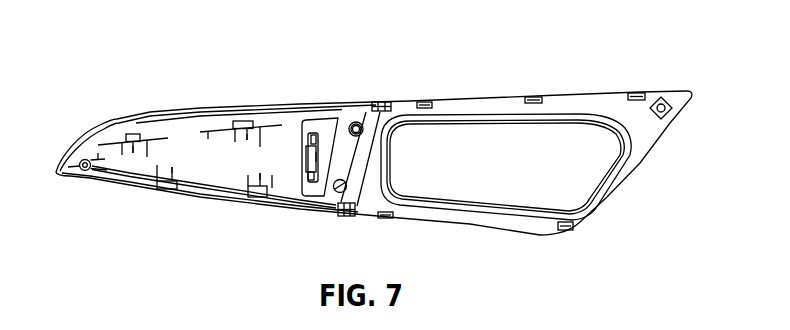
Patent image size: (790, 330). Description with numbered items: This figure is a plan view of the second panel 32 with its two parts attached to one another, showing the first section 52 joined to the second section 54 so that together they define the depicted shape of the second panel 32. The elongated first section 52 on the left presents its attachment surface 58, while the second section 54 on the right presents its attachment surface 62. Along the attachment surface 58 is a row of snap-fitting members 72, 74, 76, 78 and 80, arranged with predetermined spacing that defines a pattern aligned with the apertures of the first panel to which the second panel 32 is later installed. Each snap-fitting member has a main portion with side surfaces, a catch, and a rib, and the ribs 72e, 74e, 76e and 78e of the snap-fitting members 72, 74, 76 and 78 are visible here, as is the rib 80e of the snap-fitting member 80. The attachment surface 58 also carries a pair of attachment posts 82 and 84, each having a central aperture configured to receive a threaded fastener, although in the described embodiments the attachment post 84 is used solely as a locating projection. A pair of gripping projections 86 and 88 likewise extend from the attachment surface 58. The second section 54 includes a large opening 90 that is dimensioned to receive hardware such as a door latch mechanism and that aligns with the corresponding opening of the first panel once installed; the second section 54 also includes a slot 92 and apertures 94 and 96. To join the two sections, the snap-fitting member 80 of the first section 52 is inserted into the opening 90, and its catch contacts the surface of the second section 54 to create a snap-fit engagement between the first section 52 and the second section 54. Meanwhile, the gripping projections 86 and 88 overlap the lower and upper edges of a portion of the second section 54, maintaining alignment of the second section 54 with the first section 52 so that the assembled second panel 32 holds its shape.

The second panel 32 is at (169, 58).
The first section 52 is at (275, 107).
The second section 54 is at (466, 104).
The attachment surface 58 is at (180, 142).
The attachment surface 62 is at (587, 103).
The snap-fitting member 72 is at (165, 189).
The rib 72e is at (173, 166).
The snap-fitting member 74 is at (128, 133).
The rib 74e is at (133, 154).
The snap-fitting member 76 is at (254, 198).
The rib 76e is at (262, 176).
The snap-fitting member 78 is at (240, 120).
The rib 78e is at (247, 141).
The snap-fitting member 80 is at (307, 164).
The rib 80e is at (317, 158).
The attachment post 82 is at (84, 172).
The attachment post 84 is at (358, 122).
The gripping projection 86 is at (346, 217).
The gripping projection 88 is at (382, 101).
The opening 90 is at (495, 210).
The slot 92 is at (317, 133).
The aperture 94 is at (362, 132).
The aperture 96 is at (331, 200).